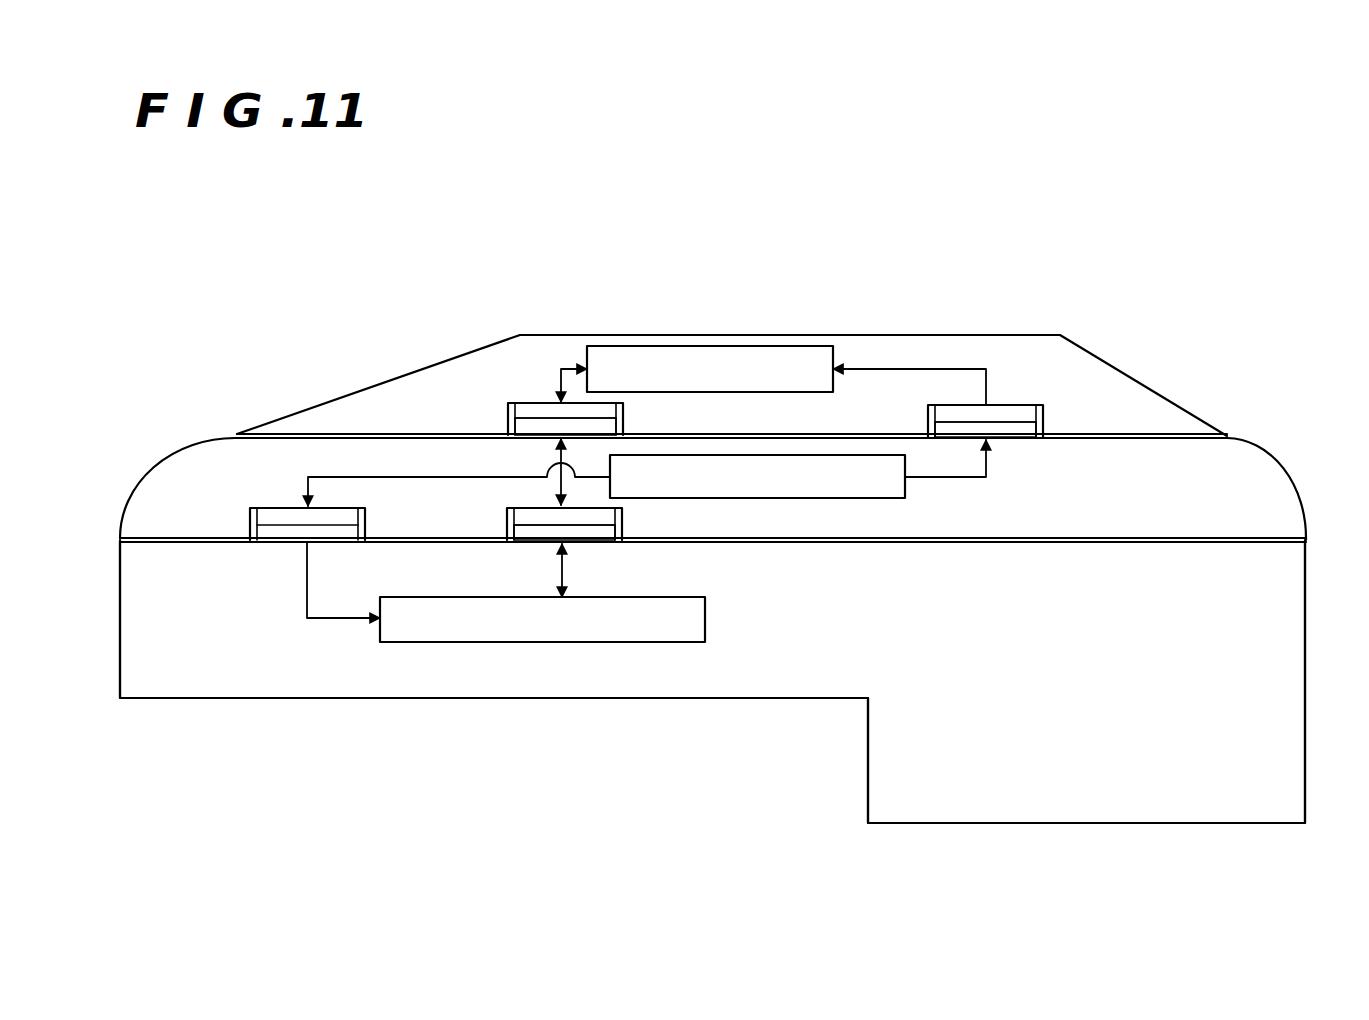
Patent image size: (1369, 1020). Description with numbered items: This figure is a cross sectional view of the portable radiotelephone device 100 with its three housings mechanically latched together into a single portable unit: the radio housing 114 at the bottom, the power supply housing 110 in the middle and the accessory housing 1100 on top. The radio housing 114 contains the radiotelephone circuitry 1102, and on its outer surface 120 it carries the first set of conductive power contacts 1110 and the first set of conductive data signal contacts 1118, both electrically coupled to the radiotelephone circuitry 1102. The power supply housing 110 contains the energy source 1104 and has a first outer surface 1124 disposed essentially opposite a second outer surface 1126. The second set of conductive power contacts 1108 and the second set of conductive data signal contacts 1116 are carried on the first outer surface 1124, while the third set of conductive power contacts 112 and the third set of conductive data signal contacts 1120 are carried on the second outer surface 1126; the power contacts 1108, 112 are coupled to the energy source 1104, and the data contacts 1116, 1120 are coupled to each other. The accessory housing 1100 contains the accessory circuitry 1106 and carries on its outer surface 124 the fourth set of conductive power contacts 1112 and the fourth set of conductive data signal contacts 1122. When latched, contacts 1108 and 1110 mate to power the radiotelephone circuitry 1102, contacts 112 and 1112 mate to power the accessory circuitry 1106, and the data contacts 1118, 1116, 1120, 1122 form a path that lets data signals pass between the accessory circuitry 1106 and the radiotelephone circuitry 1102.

The portable radiotelephone device 100 is at (368, 265).
The power supply housing 110 is at (1290, 513).
The third set of conductive power contacts 112 is at (1017, 428).
The radio housing 114 is at (1290, 657).
The outer surface of the radio housing 120 is at (217, 543).
The outer surface of the accessory housing 124 is at (460, 432).
The accessory housing 1100 is at (1192, 416).
The radiotelephone circuitry 1102 is at (706, 620).
The energy source 1104 is at (897, 500).
The accessory circuitry 1106 is at (770, 393).
The second set of conductive power contacts 1108 is at (282, 515).
The first set of conductive power contacts 1110 is at (344, 541).
The fourth set of conductive power contacts 1112 is at (1012, 410).
The second set of conductive data signal contacts 1116 is at (605, 522).
The first set of conductive data signal contacts 1118 is at (600, 543).
The third set of conductive data signal contacts 1120 is at (534, 435).
The fourth set of conductive data signal contacts 1122 is at (600, 418).
The first outer surface of the power supply housing 1124 is at (436, 537).
The second outer surface of the power supply housing 1126 is at (1137, 439).